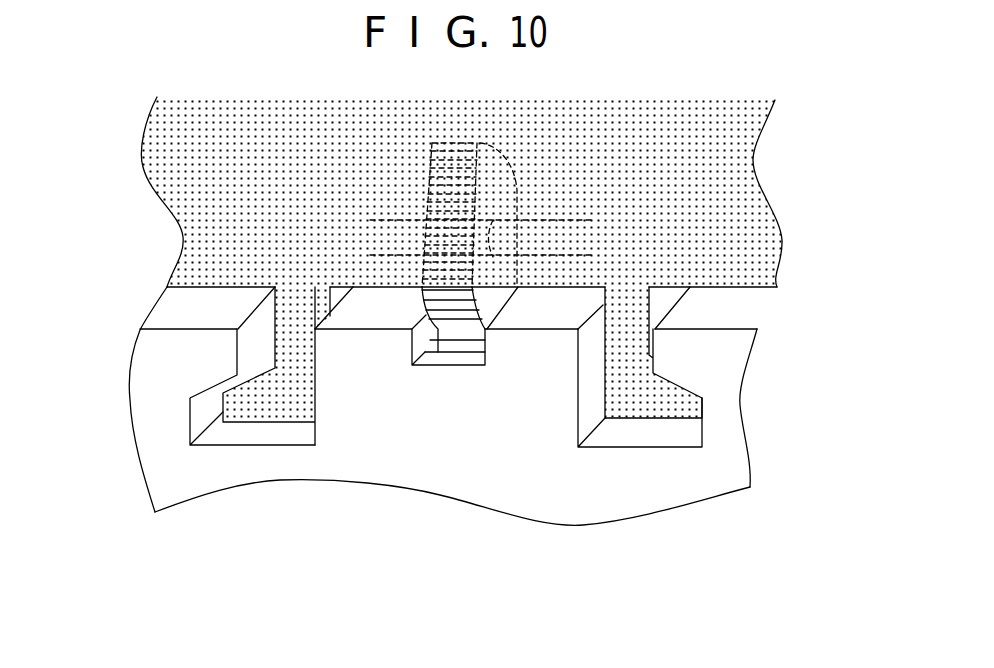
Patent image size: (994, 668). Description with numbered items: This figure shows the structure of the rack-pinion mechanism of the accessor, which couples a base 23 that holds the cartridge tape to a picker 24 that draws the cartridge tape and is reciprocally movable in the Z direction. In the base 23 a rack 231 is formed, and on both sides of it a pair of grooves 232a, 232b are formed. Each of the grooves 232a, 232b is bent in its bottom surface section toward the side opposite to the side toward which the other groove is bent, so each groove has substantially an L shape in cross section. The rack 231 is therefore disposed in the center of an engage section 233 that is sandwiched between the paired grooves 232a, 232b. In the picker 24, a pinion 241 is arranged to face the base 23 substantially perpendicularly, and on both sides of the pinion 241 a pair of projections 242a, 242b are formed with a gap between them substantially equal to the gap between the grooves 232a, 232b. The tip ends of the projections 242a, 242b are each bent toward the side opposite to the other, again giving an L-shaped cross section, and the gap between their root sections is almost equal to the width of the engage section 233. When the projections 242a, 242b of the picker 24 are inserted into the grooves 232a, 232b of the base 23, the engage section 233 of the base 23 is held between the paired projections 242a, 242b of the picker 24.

The base 23 is at (723, 463).
The picker 24 is at (738, 152).
The rack 231 is at (440, 353).
The groove 232a is at (270, 438).
The groove 232b is at (645, 442).
The engage section 233 is at (552, 403).
The pinion 241 is at (421, 200).
The projection 242a is at (283, 388).
The projection 242b is at (670, 393).